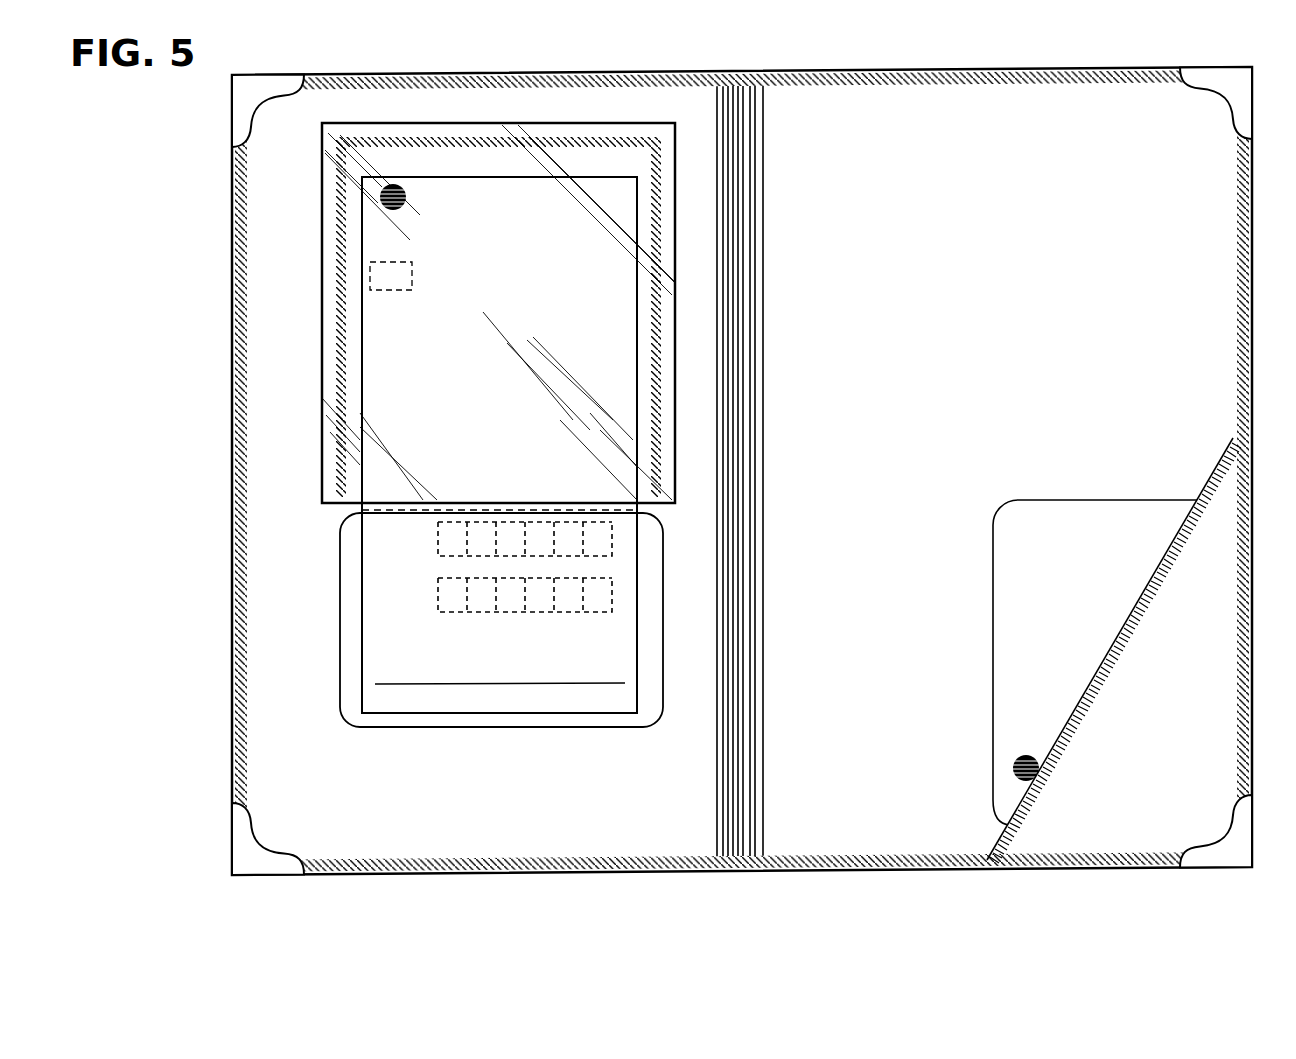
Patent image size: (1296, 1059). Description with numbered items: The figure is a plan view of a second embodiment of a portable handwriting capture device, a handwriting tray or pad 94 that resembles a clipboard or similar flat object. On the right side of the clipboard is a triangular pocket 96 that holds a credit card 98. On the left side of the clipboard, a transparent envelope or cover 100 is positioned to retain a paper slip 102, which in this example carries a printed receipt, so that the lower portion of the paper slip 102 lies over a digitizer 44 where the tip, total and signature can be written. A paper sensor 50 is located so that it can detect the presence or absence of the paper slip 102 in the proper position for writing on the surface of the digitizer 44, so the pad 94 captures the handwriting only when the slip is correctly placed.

The handwriting tray or pad 94 is at (572, 62).
The transparent envelope or cover 100 is at (322, 343).
The paper sensor 50 is at (368, 283).
The digitizer 44 is at (340, 686).
The paper slip 102 is at (362, 623).
The credit card 98 is at (1087, 500).
The triangular pocket 96 is at (1185, 660).